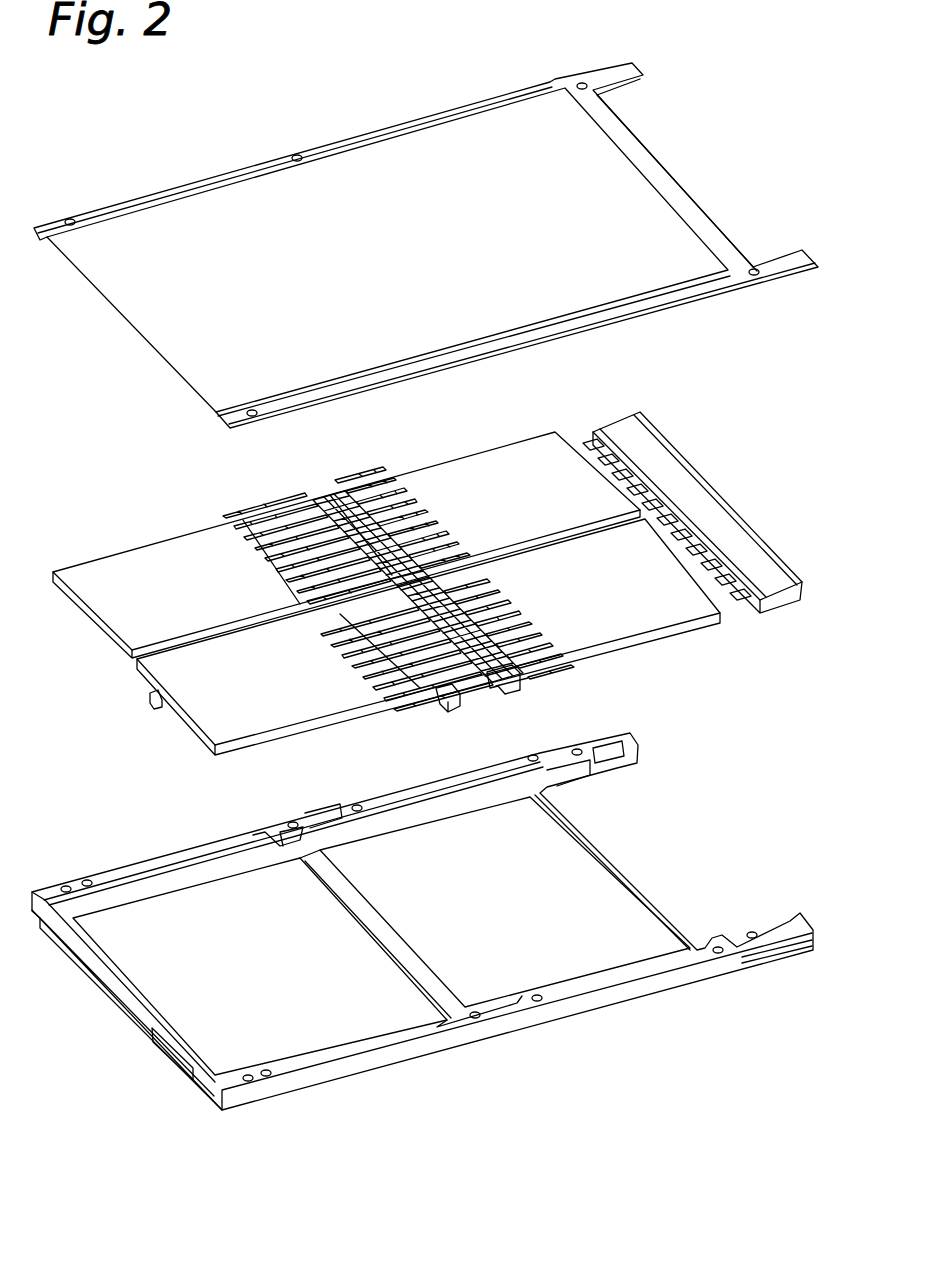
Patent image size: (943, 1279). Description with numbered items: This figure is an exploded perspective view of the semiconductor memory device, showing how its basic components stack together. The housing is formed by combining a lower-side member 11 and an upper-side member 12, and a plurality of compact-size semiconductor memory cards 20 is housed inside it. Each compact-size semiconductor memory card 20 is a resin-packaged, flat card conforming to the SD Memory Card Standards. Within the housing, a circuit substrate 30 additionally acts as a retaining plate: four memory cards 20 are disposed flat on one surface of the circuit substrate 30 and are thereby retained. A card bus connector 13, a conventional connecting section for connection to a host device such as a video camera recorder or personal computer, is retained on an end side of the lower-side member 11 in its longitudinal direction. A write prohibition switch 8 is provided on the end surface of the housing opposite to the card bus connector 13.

The upper-side member 12 is at (417, 140).
The compact-size semiconductor memory card 20 is at (153, 552).
The card bus connector 13 is at (718, 505).
The write prohibition switch 8 is at (152, 698).
The circuit substrate 30 is at (457, 710).
The lower-side member 11 is at (353, 1067).